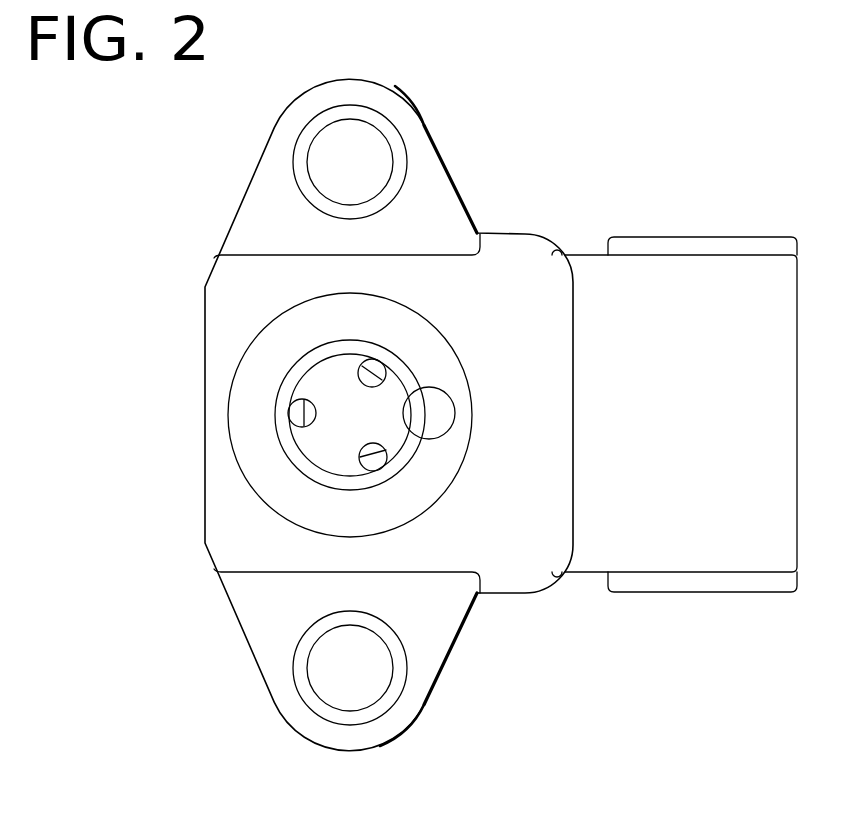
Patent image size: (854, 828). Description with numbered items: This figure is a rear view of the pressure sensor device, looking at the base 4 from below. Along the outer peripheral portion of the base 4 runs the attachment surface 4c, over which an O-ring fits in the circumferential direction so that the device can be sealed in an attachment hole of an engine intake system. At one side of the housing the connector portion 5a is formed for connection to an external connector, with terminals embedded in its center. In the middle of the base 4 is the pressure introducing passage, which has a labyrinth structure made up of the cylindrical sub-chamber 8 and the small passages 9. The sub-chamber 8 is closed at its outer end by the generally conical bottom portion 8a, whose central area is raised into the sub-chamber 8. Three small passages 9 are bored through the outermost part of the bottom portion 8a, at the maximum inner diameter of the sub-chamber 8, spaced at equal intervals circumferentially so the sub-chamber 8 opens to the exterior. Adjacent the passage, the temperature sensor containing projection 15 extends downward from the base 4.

The base 4 is at (527, 233).
The attachment surface 4c is at (462, 367).
The connector portion 5a is at (697, 236).
The sub-chamber 8 is at (300, 421).
The bottom portion 8a is at (327, 450).
The small passage 9 is at (296, 406).
The temperature sensor containing projection 15 is at (450, 430).